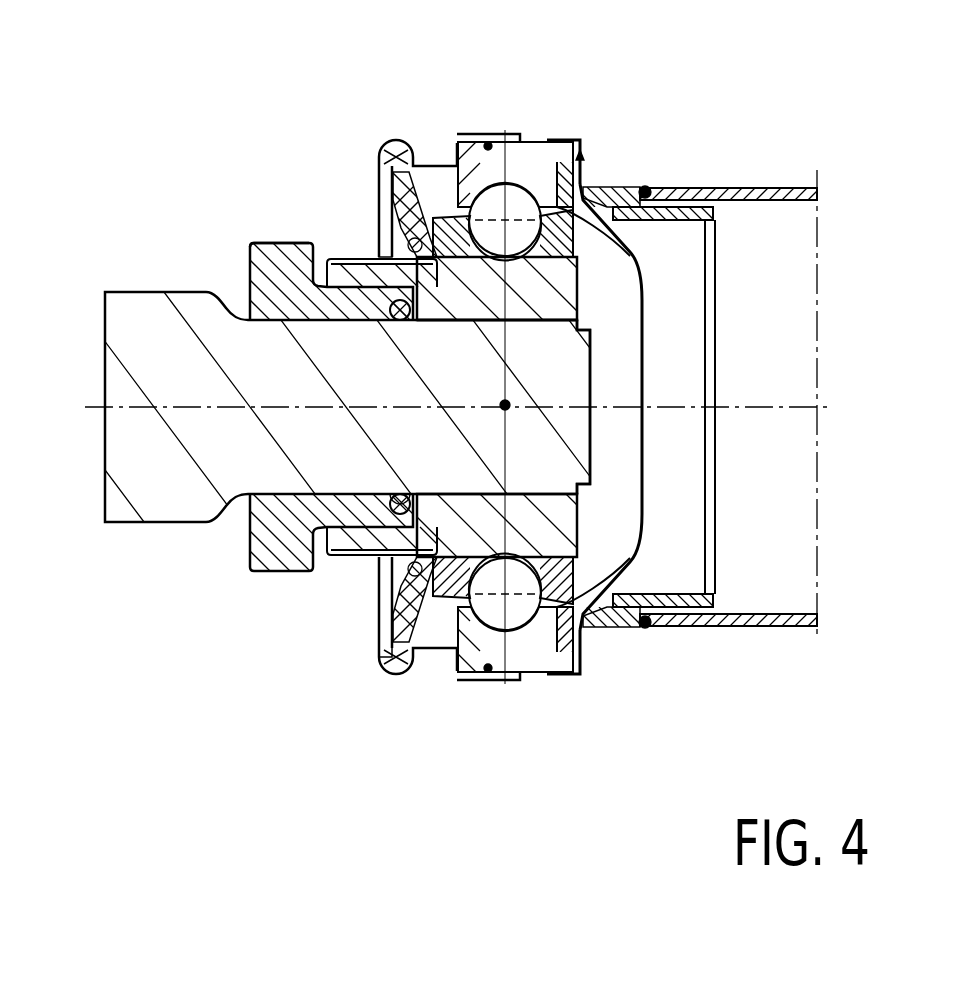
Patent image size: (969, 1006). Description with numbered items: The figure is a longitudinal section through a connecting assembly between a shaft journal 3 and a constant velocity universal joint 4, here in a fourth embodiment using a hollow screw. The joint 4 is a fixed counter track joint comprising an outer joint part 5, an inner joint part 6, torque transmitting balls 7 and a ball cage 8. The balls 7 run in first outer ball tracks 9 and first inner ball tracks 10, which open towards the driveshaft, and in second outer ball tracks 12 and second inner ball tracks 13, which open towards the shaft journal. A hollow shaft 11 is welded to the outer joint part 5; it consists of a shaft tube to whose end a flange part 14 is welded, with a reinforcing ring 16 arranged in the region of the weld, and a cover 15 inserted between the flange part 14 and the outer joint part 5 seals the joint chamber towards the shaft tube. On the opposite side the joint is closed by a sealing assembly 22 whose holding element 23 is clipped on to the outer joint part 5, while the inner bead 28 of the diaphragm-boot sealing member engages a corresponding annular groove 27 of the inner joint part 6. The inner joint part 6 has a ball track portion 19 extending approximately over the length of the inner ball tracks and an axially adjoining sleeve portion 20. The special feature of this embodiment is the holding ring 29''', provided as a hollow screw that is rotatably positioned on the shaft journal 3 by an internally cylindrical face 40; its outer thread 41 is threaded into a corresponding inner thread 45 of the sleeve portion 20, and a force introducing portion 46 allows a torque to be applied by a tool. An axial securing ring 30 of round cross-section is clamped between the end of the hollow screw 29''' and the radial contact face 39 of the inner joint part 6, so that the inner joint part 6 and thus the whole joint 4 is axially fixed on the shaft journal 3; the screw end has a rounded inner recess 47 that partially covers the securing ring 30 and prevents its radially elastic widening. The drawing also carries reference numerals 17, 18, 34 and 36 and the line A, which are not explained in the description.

The shaft journal 3 is at (130, 320).
The constant velocity universal joint 4 is at (536, 104).
The outer joint part 5 is at (548, 142).
The inner joint part 6 is at (568, 302).
The torque transmitting balls 7 is at (617, 252).
The ball cage 8 is at (600, 190).
The first outer ball tracks 9 is at (582, 152).
The first inner ball tracks 10 is at (550, 265).
The hollow shaft 11 is at (771, 168).
The second outer ball tracks 12 is at (483, 672).
The second inner ball tracks 13 is at (548, 557).
The flange part 14 is at (600, 632).
The cover 15 is at (645, 345).
The reinforcing ring 16 is at (687, 610).
The lower hub 17 is at (573, 480).
The shaft end 18 is at (575, 387).
The ball track portion 19 is at (488, 300).
The sleeve portion 20 is at (353, 557).
The sealing assembly 22 is at (426, 136).
The holding element 23 is at (482, 138).
The annular groove 27 is at (385, 148).
The inner bead 28 is at (437, 525).
The holding ring 29''' is at (221, 191).
The axial securing ring 30 is at (394, 493).
The upper O-ring 34 is at (392, 322).
The groove 36 is at (406, 490).
The contact face 39 is at (398, 200).
The internally cylindrical face 40 is at (247, 500).
The outer thread 41 is at (345, 286).
The inner thread 45 is at (330, 563).
The force introducing portion 46 is at (270, 553).
The rounded inner recess 47 is at (397, 325).
The section line A is at (803, 404).